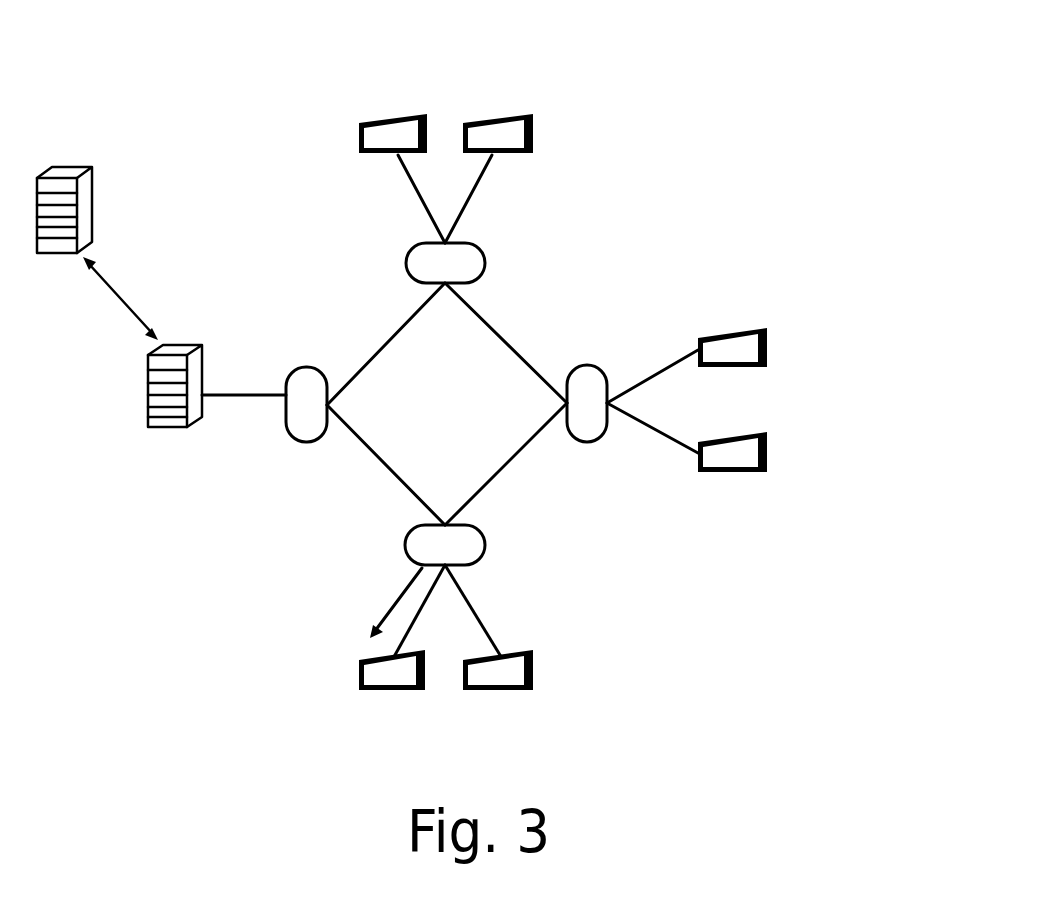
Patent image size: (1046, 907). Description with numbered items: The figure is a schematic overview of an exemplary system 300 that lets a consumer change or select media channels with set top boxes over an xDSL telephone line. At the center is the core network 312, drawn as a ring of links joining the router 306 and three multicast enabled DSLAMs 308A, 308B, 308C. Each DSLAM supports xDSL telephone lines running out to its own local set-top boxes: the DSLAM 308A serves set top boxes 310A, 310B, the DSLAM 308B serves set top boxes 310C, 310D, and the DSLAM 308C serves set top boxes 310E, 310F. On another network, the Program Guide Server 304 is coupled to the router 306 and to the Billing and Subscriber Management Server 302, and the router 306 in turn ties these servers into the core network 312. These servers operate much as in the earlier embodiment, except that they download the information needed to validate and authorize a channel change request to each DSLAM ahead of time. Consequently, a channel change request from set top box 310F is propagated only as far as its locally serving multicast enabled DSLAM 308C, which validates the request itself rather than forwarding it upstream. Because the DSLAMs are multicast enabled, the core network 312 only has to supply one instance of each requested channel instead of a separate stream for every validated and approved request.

The system 300 is at (806, 42).
The Billing and Subscriber Management Server 302 is at (90, 169).
The Program Guide Server 304 is at (147, 376).
The router 306 is at (300, 443).
The multicast enabled DSLAM 308A is at (415, 243).
The multicast enabled DSLAM 308B is at (589, 443).
The multicast enabled DSLAM 308C is at (483, 533).
The set top box 310A is at (393, 117).
The set top box 310B is at (497, 117).
The set top box 310C is at (733, 331).
The set top box 310D is at (733, 435).
The set top box 310E is at (500, 692).
The set top box 310F is at (395, 692).
The core network 312 is at (507, 342).